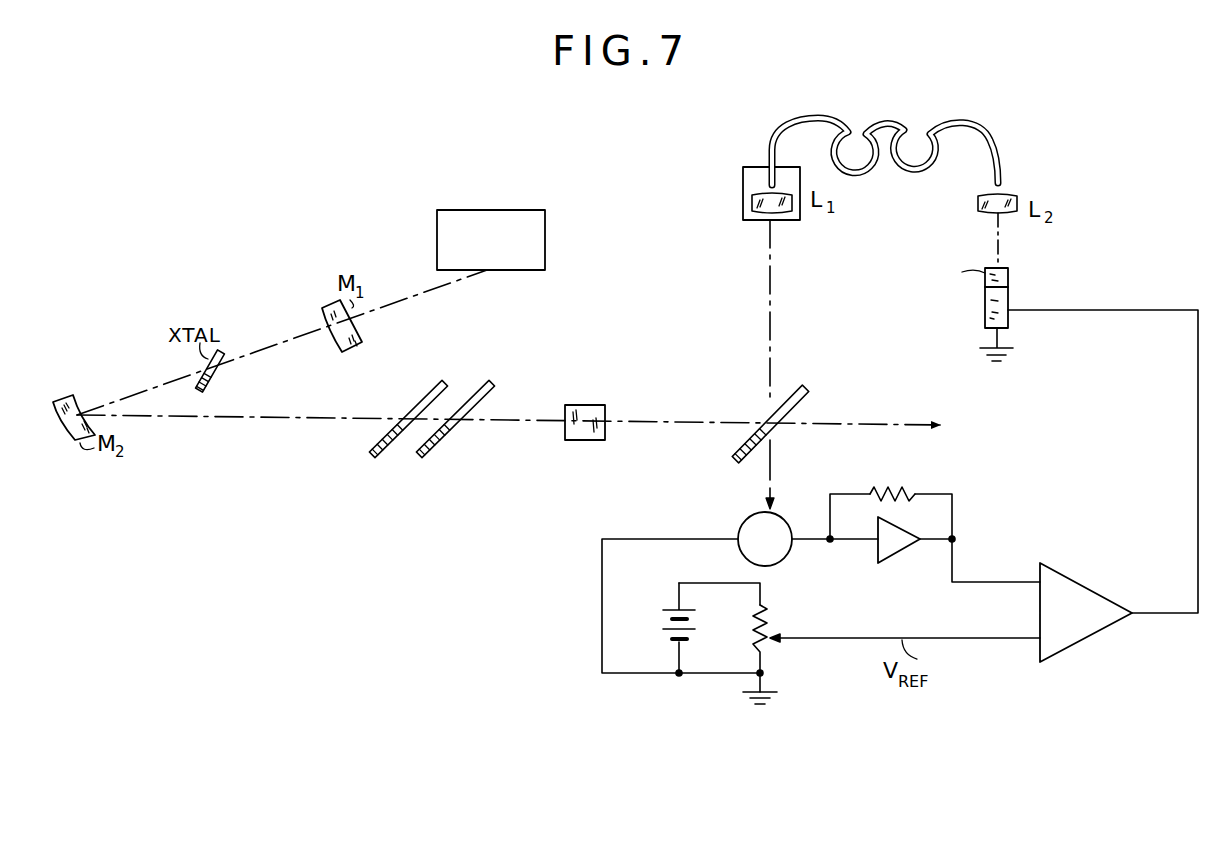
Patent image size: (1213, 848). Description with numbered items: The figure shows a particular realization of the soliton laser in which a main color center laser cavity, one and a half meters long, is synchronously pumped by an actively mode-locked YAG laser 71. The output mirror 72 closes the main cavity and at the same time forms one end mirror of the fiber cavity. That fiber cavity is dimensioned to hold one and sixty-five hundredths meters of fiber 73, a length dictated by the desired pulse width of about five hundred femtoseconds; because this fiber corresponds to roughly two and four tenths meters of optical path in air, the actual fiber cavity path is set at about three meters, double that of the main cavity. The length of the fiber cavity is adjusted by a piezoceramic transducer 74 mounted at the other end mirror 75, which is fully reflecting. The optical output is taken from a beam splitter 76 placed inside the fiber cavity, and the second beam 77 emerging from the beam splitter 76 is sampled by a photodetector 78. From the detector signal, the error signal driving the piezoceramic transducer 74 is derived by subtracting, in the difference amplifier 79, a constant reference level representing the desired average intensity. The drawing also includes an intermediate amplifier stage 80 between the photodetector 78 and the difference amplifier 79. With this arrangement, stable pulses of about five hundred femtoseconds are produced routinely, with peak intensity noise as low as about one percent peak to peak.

The YAG laser 71 is at (521, 208).
The output mirror 72 is at (585, 441).
The fiber 73 is at (905, 117).
The piezoceramic transducer 74 is at (1008, 325).
The end mirror 75 is at (967, 291).
The beam splitter 76 is at (800, 386).
The second beam 77 is at (770, 480).
The photodetector 78 is at (745, 523).
The difference amplifier 79 is at (1100, 632).
The amplifier 80 is at (906, 556).